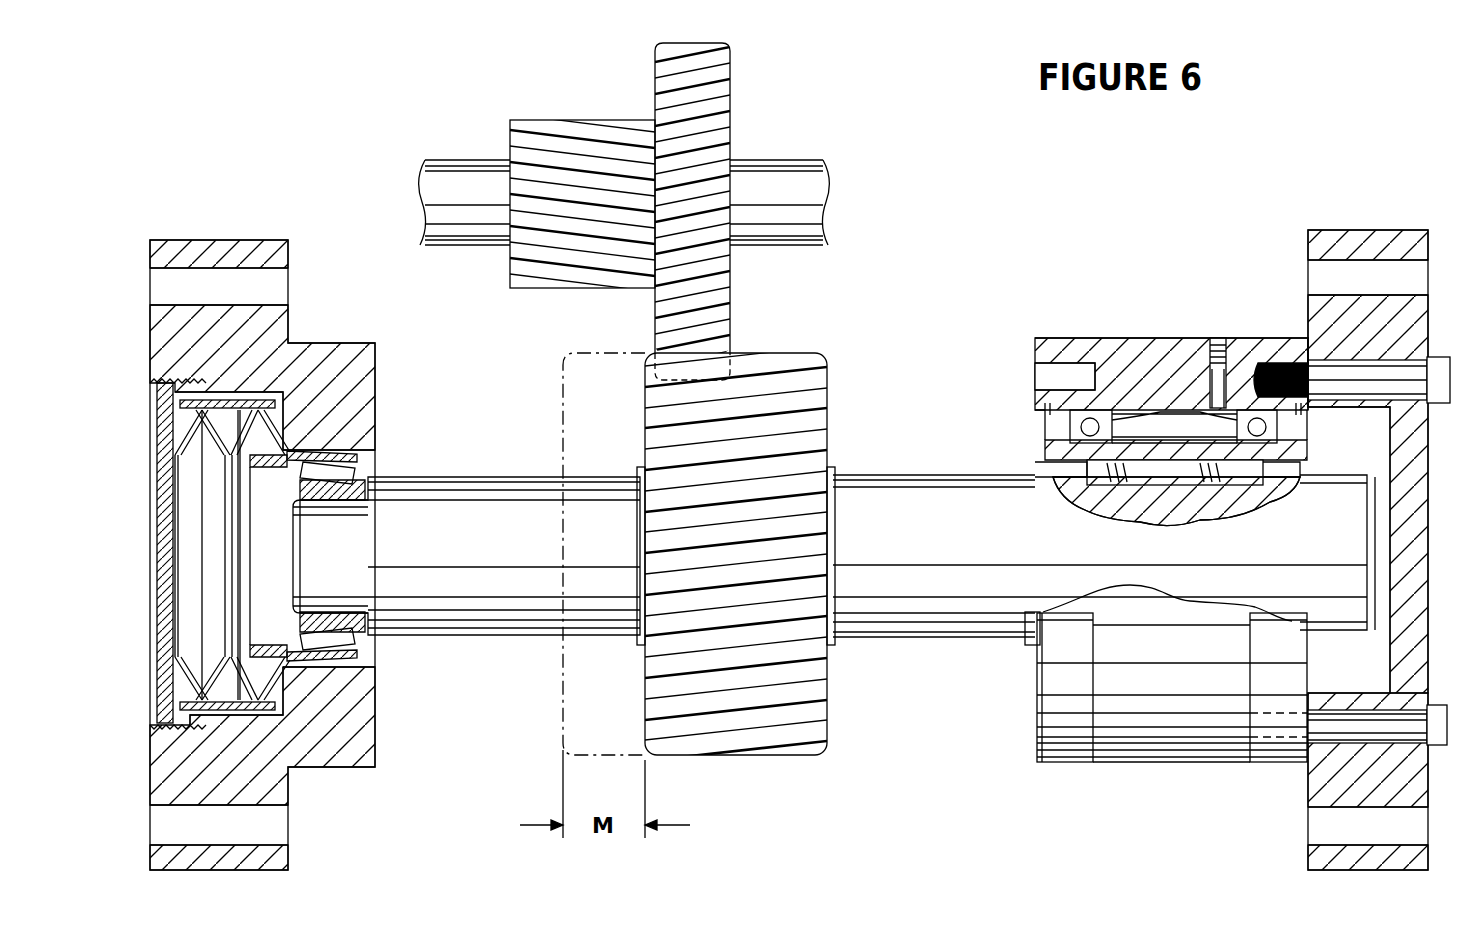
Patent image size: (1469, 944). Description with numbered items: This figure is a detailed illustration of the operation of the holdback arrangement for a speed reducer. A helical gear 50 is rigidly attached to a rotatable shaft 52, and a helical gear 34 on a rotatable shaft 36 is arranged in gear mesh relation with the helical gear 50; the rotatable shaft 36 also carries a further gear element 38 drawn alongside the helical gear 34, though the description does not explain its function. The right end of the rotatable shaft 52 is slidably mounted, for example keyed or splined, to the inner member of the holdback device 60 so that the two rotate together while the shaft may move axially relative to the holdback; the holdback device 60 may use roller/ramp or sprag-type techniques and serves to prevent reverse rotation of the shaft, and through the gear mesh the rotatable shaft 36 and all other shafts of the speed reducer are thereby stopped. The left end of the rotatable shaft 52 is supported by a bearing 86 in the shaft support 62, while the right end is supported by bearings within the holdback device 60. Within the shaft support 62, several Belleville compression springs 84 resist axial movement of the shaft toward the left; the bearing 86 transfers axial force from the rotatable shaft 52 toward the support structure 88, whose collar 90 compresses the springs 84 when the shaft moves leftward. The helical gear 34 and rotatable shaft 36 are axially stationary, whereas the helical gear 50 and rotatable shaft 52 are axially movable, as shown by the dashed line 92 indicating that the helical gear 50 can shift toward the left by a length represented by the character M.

The helical gear 34 is at (722, 92).
The rotatable shaft 36 is at (465, 165).
The helical gear 38 is at (585, 130).
The helical gear 50 is at (815, 402).
The rotatable shaft 52 is at (520, 615).
The holdback device 60 is at (1147, 314).
The shaft support 62 is at (270, 530).
The Belleville compression springs 84 is at (215, 690).
The bearing 86 is at (345, 470).
The support structure 88 is at (360, 727).
The collar 90 is at (280, 600).
The dashed line 92 is at (565, 380).